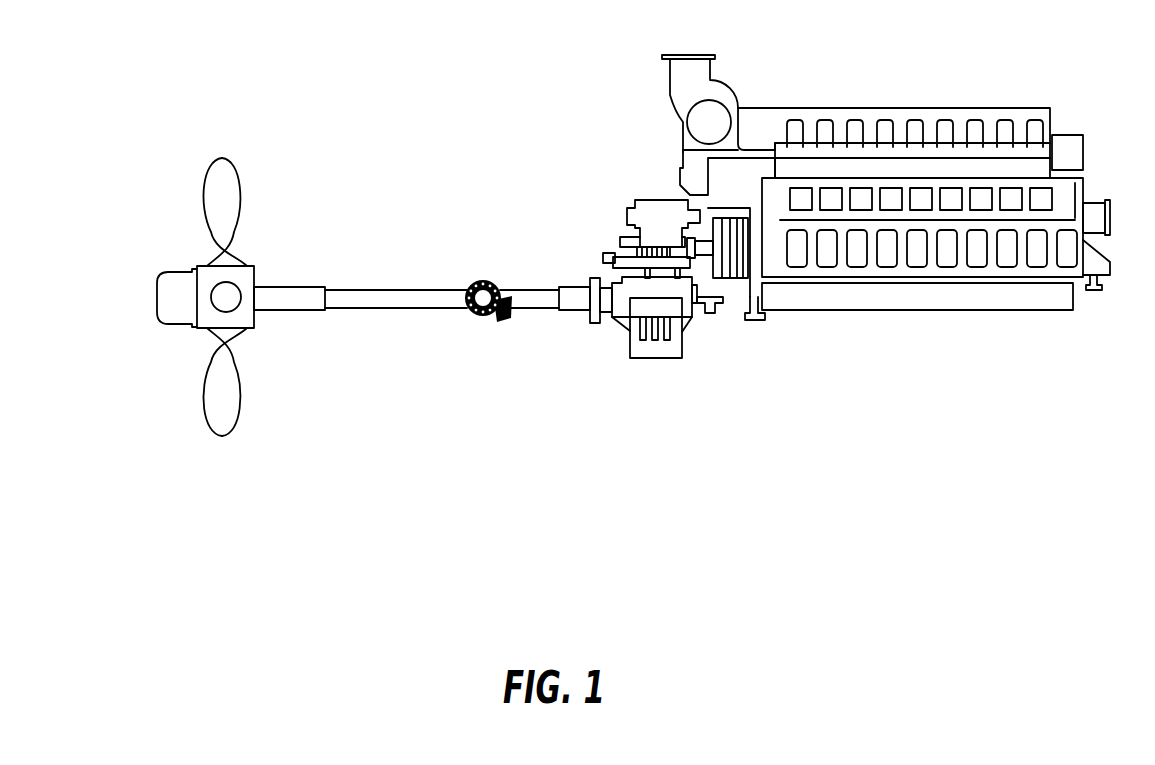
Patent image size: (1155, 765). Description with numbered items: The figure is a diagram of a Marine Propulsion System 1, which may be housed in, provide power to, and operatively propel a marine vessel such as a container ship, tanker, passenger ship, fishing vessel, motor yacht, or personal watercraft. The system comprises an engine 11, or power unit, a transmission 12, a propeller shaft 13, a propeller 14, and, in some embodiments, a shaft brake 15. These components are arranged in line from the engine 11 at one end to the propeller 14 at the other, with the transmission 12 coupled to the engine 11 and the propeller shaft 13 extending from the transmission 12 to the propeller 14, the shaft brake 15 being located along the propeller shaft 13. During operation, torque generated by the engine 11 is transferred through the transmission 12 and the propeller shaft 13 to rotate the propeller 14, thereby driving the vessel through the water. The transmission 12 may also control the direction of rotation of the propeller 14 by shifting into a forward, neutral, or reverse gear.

The marine propulsion system 1 is at (293, 106).
The engine 11 is at (1017, 157).
The transmission 12 is at (658, 212).
The propeller shaft 13 is at (416, 298).
The propeller 14 is at (215, 189).
The shaft brake 15 is at (483, 278).